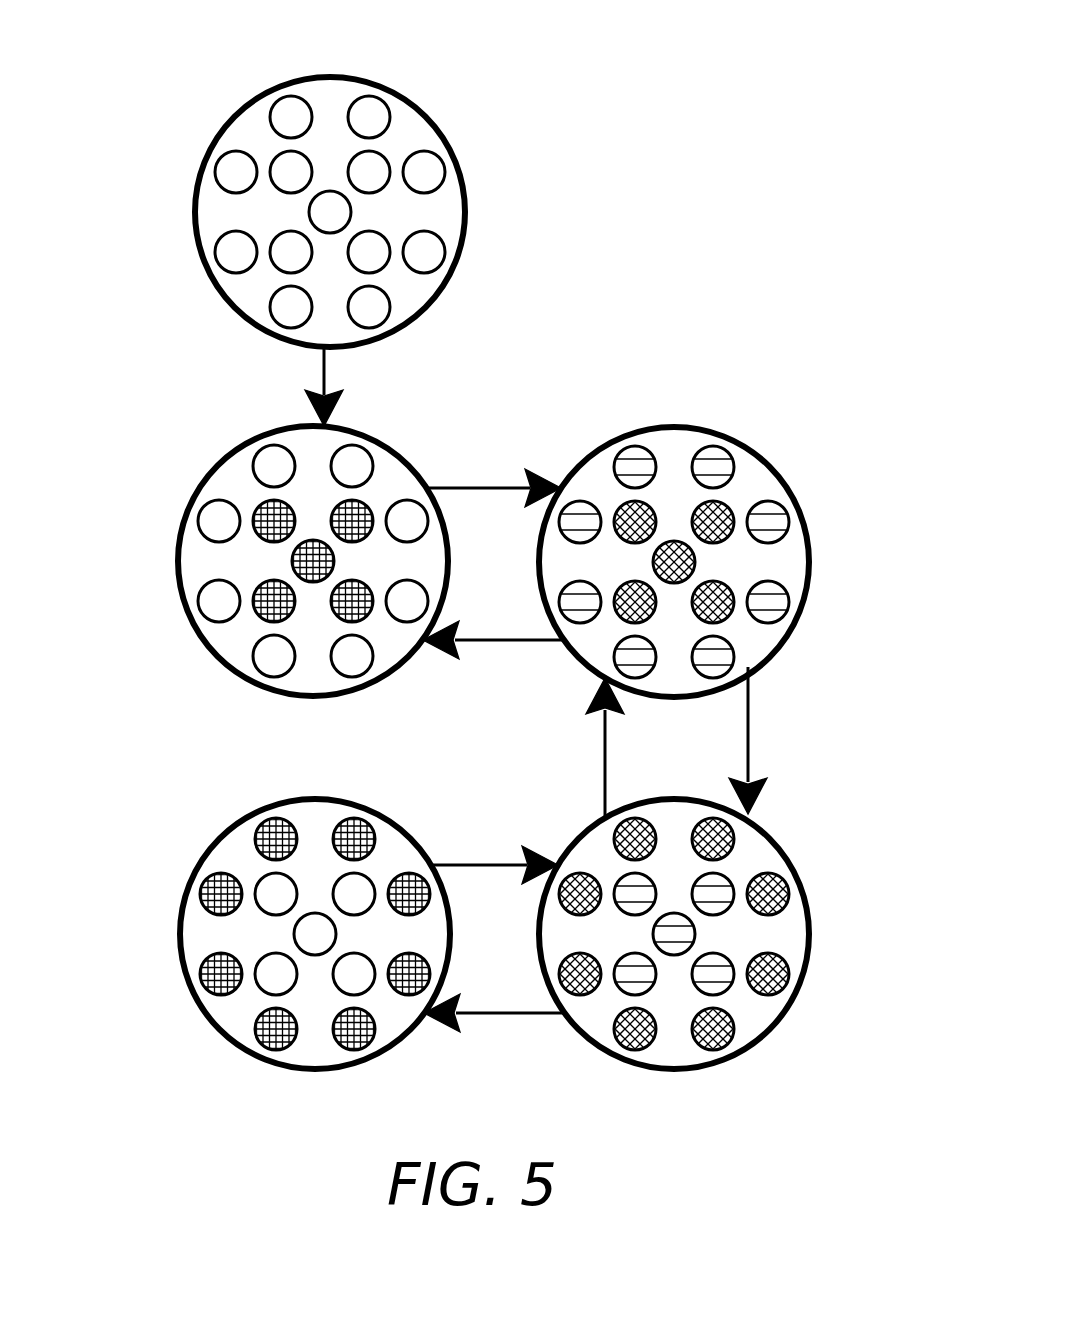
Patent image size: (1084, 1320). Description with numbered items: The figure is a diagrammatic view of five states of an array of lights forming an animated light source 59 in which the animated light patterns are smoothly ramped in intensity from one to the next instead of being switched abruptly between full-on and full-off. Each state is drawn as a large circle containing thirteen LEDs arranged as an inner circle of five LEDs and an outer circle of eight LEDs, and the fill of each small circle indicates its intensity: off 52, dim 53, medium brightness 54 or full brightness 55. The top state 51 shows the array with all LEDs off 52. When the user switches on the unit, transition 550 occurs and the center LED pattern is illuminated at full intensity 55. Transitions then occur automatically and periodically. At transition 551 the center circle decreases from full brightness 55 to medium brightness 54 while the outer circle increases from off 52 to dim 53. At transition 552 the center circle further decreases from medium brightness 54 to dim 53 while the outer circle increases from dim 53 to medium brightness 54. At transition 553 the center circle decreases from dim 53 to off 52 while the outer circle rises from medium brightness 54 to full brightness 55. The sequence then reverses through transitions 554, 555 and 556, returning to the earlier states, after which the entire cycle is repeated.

The original set of pixels 51 is at (305, 78).
The off 52 is at (235, 150).
The dim 53 is at (768, 500).
The medium brightness 54 is at (717, 582).
The full brightness 55 is at (262, 500).
The animated light source 59 is at (672, 228).
The transition 550 is at (323, 378).
The transition 551 is at (472, 485).
The transition 552 is at (750, 753).
The transition 553 is at (508, 1013).
The transition 554 is at (490, 862).
The transition 555 is at (605, 753).
The transition 556 is at (500, 643).